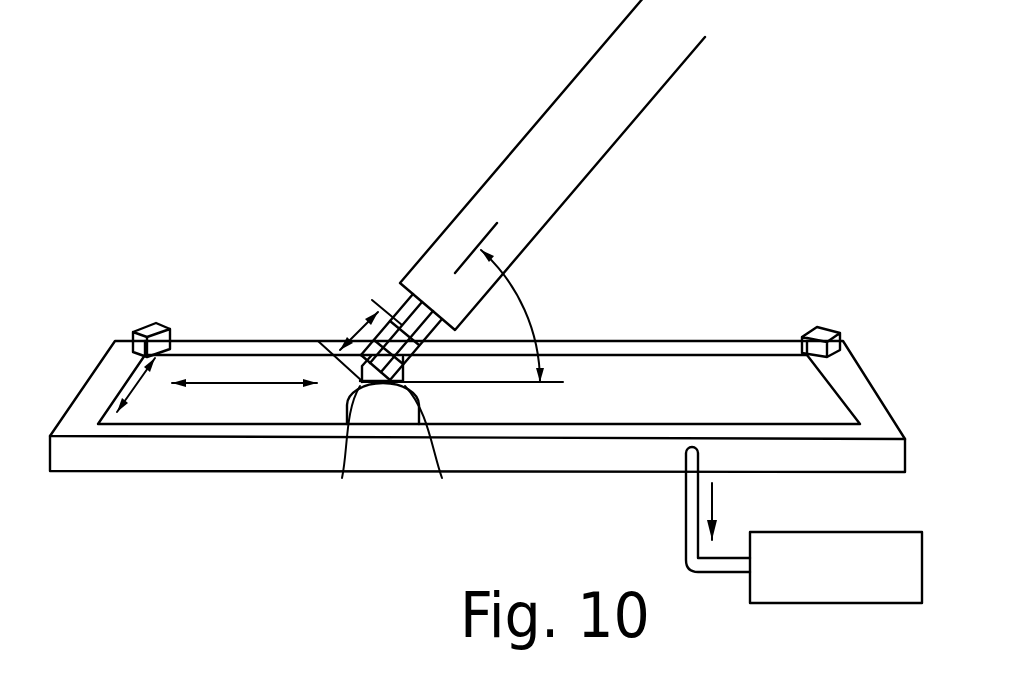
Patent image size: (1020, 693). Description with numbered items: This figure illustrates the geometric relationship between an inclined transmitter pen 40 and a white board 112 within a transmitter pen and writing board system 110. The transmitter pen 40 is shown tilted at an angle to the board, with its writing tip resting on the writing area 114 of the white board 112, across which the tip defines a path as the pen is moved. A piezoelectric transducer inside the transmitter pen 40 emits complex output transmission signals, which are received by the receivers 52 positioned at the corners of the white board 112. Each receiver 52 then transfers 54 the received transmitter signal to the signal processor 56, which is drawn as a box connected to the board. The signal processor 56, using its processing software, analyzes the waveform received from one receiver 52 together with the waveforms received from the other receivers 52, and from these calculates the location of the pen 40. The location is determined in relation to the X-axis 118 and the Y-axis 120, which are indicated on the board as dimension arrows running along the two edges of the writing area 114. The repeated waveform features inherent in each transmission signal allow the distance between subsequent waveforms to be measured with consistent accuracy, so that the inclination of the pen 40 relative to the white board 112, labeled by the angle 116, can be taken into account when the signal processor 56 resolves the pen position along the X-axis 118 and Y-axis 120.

The transmitter pen 40 is at (580, 98).
The receiver 52 is at (147, 331).
The transfer 54 is at (685, 522).
The signal processor 56 is at (810, 604).
The transmitter pen and writing board system 110 is at (252, 162).
The white board 112 is at (195, 297).
The writing area 114 is at (580, 346).
The pen angle theta 116 is at (555, 297).
The X-axis 118 is at (253, 368).
The Y-axis 120 is at (157, 402).